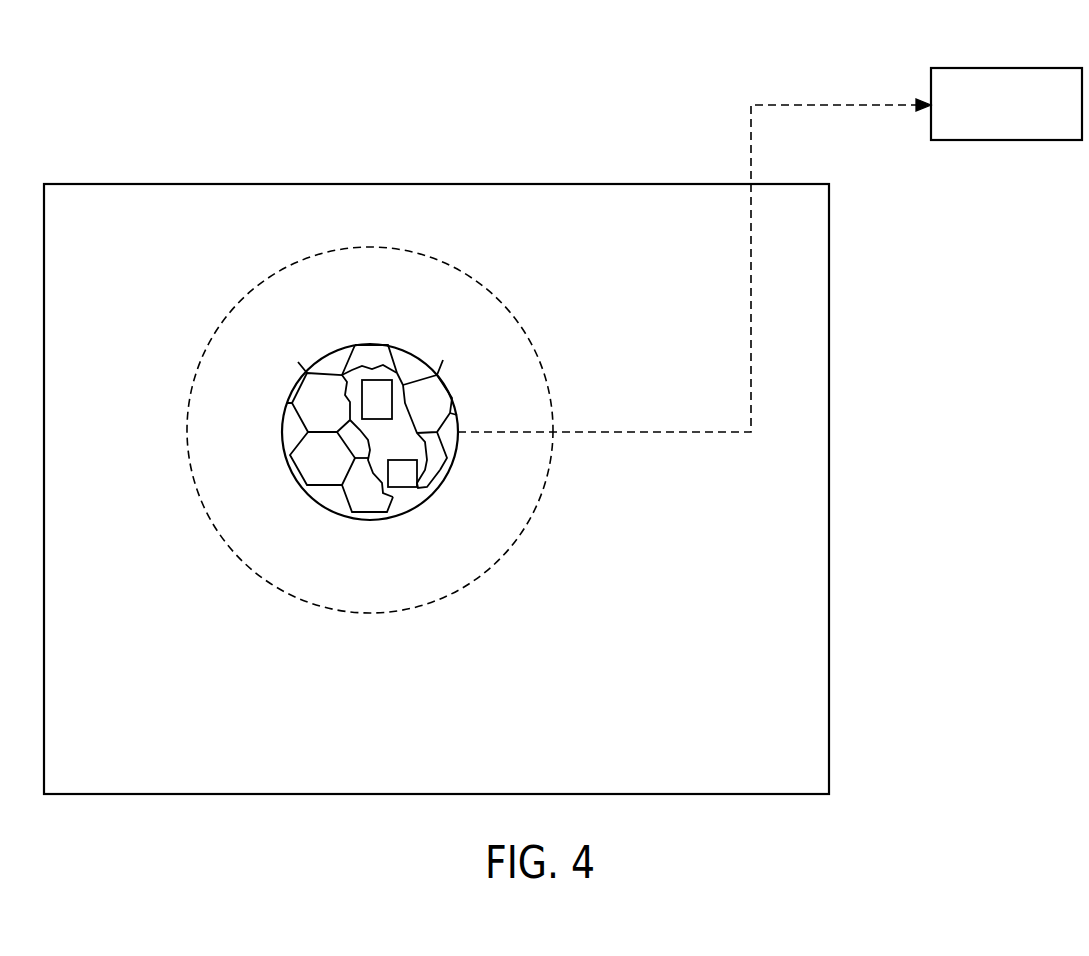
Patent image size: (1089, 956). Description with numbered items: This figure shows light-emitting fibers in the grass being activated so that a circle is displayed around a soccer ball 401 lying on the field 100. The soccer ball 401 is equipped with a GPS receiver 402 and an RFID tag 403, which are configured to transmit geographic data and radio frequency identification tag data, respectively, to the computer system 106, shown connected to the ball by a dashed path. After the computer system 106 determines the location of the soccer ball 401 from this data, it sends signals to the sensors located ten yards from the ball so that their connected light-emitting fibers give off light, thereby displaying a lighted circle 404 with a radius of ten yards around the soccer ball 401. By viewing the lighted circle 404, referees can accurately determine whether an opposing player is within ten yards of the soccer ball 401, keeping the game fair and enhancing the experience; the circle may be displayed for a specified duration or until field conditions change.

The field 100 is at (560, 184).
The computer system 106 is at (1006, 68).
The soccer ball 401 is at (366, 343).
The GPS receiver 402 is at (378, 401).
The RFID tag 403 is at (407, 477).
The lighted circle 404 is at (490, 603).